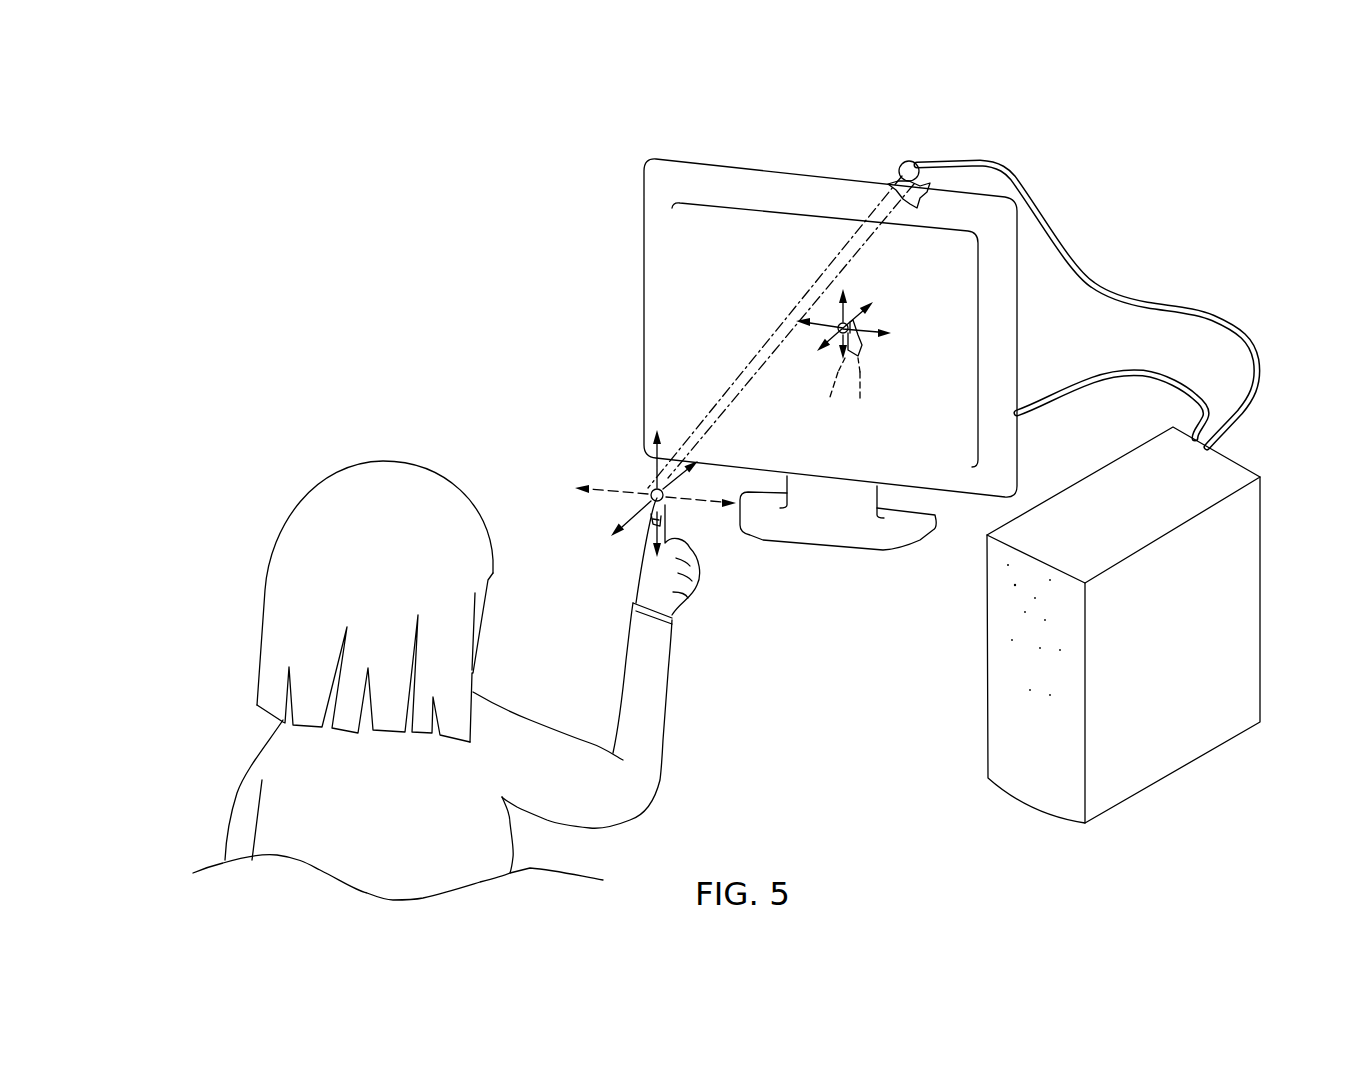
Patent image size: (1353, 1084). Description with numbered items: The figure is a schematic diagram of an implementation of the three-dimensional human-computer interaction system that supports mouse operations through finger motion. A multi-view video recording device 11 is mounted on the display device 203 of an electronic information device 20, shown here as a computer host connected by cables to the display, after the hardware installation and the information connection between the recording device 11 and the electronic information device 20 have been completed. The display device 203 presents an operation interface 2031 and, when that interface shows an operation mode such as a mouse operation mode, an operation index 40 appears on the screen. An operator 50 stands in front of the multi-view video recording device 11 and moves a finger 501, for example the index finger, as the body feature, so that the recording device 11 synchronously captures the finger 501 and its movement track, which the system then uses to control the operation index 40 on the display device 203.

The multi-view video recording device 11 is at (920, 158).
The electronic information device 20 is at (1010, 743).
The display device 203 is at (660, 195).
The operation interface 2031 is at (697, 325).
The operation index 40 is at (863, 350).
The finger 501 is at (647, 480).
The operator 50 is at (277, 773).